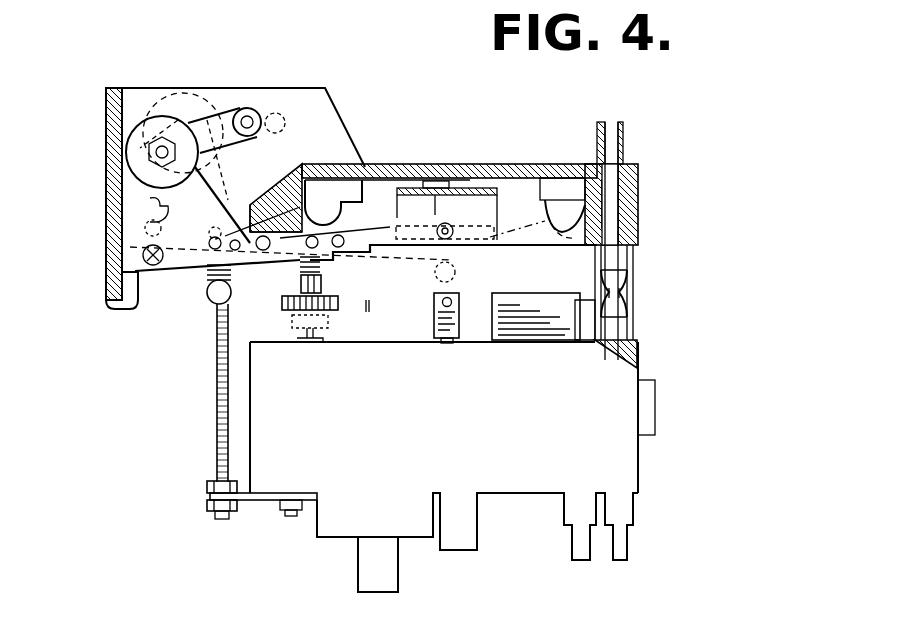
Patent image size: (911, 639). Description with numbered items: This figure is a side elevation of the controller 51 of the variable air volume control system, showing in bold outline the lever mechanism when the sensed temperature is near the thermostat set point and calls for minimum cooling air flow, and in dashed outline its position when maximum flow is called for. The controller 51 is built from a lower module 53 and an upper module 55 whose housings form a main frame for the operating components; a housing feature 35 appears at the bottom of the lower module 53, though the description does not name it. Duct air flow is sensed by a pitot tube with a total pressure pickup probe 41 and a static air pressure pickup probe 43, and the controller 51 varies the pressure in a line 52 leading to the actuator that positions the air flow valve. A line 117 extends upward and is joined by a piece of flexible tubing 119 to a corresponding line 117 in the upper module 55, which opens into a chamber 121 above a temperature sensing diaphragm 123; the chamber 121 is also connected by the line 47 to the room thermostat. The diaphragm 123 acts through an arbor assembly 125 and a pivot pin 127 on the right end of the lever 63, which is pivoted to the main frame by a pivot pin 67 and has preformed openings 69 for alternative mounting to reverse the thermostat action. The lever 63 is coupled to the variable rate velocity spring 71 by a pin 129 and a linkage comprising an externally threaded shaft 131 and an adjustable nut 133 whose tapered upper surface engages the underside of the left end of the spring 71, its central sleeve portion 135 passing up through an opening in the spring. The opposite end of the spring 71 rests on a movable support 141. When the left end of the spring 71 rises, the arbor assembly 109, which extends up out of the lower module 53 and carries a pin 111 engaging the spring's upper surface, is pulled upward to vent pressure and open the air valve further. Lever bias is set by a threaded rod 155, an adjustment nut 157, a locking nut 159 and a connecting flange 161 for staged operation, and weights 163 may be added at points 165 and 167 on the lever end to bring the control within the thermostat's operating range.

The housing bottom 35 is at (380, 594).
The total pressure pickup probe 41 is at (628, 560).
The static air pressure pickup probe 43 is at (572, 548).
The line 47 is at (622, 122).
The controller 51 is at (725, 128).
The line 52 is at (458, 552).
The lower module 53 is at (640, 470).
The upper module 55 is at (640, 200).
The lever 63 is at (392, 164).
The pivot pin 67 is at (236, 212).
The preformed openings 69 is at (372, 164).
The variable rate velocity spring 71 is at (634, 310).
The arbor assembly 109 is at (448, 343).
The pin 111 is at (443, 303).
The line 117 is at (634, 256).
The flexible tubing 119 is at (634, 282).
The chamber 121 is at (562, 208).
The temperature sensing diaphragm 123 is at (525, 164).
The arbor assembly 125 is at (456, 213).
The pivot pin 127 is at (453, 240).
The pin 129 is at (333, 164).
The externally threaded shaft 131 is at (208, 287).
The adjustable nut 133 is at (290, 300).
The central sleeve portion 135 is at (296, 292).
The movable support 141 is at (575, 295).
The threaded rod 155 is at (217, 418).
The adjustment nut 157 is at (206, 505).
The locking nut 159 is at (206, 486).
The connecting flange 161 is at (262, 505).
The weights 163 is at (147, 118).
The point 165 is at (247, 108).
The point 167 is at (156, 150).